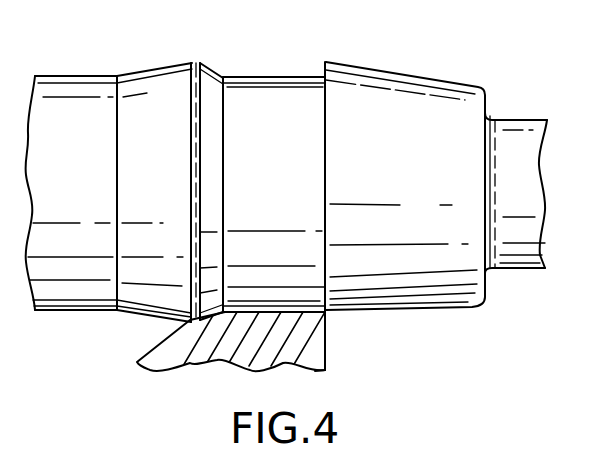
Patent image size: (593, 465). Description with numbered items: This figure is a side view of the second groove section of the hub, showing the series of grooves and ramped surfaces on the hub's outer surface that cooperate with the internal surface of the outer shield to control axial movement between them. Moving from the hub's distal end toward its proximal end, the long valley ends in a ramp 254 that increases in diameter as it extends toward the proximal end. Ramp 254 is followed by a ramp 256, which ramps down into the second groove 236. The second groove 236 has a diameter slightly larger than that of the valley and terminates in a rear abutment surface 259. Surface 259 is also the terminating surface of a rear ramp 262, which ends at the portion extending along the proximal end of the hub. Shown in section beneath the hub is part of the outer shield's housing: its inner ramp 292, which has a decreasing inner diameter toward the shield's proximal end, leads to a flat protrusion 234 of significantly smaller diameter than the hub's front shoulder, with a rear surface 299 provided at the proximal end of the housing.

The ramp 254 is at (164, 67).
The ramp 256 is at (209, 70).
The second groove 236 is at (237, 77).
The rear abutment surface 259 is at (323, 73).
The rear ramp 262 is at (385, 70).
The flat protrusion 234 is at (326, 333).
The ramp 292 is at (150, 345).
The rear surface 299 is at (327, 369).